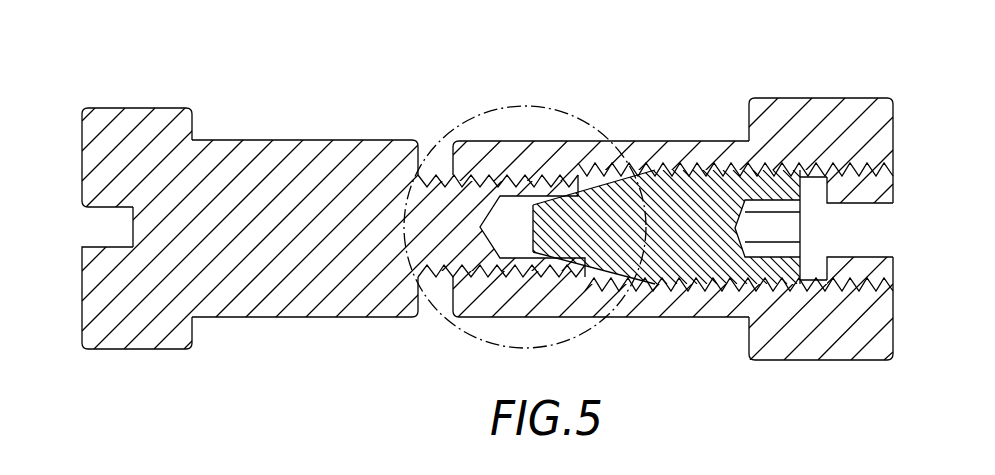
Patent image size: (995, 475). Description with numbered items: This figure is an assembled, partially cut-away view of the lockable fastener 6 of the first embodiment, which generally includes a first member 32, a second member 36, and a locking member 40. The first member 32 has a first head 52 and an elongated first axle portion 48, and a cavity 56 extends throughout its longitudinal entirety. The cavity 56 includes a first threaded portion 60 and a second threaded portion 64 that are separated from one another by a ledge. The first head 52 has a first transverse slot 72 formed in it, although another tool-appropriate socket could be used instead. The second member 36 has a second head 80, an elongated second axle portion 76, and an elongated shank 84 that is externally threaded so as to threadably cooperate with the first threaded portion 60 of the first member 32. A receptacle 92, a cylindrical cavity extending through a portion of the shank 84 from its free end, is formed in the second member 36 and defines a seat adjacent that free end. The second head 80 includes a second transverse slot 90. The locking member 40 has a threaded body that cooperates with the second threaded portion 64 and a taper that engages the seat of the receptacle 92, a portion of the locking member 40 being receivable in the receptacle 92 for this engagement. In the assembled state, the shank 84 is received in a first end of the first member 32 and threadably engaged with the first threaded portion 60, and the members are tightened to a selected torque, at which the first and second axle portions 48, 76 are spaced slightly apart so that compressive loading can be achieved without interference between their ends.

The lockable fastener 6 is at (531, 96).
The first member 32 is at (696, 188).
The second member 36 is at (322, 177).
The locking member 40 is at (812, 266).
The first axle portion 48 is at (690, 140).
The first head 52 is at (830, 98).
The cavity 56 is at (885, 179).
The first threaded portion 60 is at (460, 196).
The second threaded portion 64 is at (858, 176).
The first transverse slot 72 is at (832, 212).
The second axle portion 76 is at (237, 141).
The second head 80 is at (118, 107).
The shank 84 is at (437, 177).
The second transverse slot 90 is at (130, 221).
The receptacle 92 is at (512, 197).